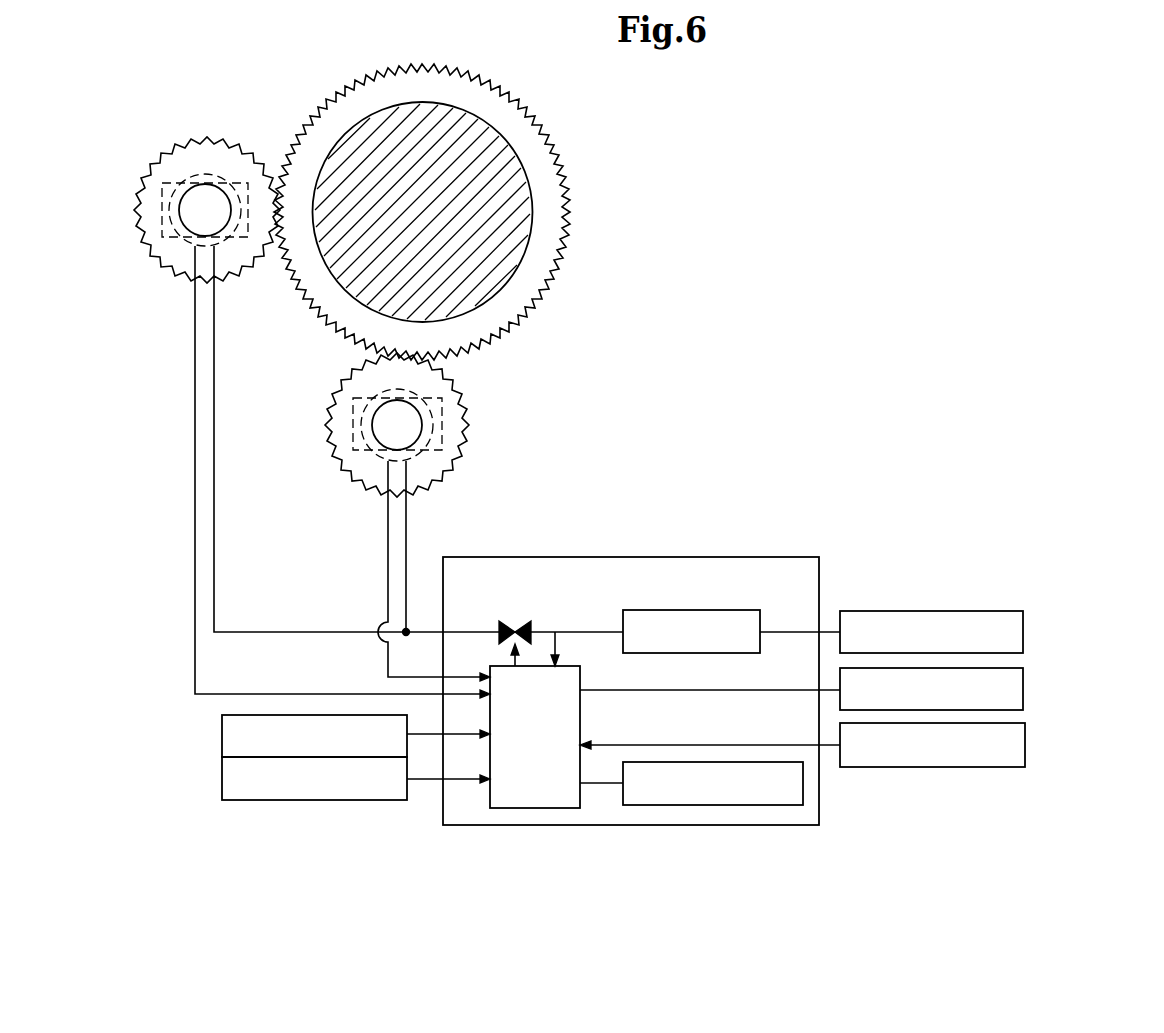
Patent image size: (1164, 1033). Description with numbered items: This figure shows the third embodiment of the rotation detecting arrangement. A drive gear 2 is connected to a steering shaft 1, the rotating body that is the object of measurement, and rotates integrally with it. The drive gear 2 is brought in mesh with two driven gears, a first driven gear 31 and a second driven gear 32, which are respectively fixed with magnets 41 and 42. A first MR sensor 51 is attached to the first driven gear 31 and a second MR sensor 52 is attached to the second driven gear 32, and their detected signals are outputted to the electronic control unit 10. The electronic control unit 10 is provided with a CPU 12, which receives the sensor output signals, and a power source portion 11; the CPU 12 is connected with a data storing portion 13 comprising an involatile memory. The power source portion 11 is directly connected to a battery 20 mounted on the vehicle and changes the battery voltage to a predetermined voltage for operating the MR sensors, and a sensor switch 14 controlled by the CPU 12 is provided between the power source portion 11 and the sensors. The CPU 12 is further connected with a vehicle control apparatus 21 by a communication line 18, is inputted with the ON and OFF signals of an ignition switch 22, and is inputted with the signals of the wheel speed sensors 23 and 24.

The steering shaft 1 is at (528, 173).
The drive gear 2 is at (528, 107).
The electronic control unit 10 is at (759, 557).
The power source portion 11 is at (697, 653).
The CPU 12 is at (513, 808).
The data storing portion 13 is at (648, 805).
The sensor switch 14 is at (512, 621).
The communication line 18 is at (697, 690).
The battery 20 is at (1023, 633).
The vehicle control apparatus 21 is at (1023, 690).
The ignition switch 22 is at (1025, 745).
The wheel speed sensor 23 is at (222, 733).
The wheel speed sensor 24 is at (222, 778).
The first driven gear 31 is at (182, 147).
The second driven gear 32 is at (463, 403).
The magnet 41 is at (162, 227).
The magnet 42 is at (355, 405).
The first MR sensor 51 is at (177, 177).
The second MR sensor 52 is at (423, 462).